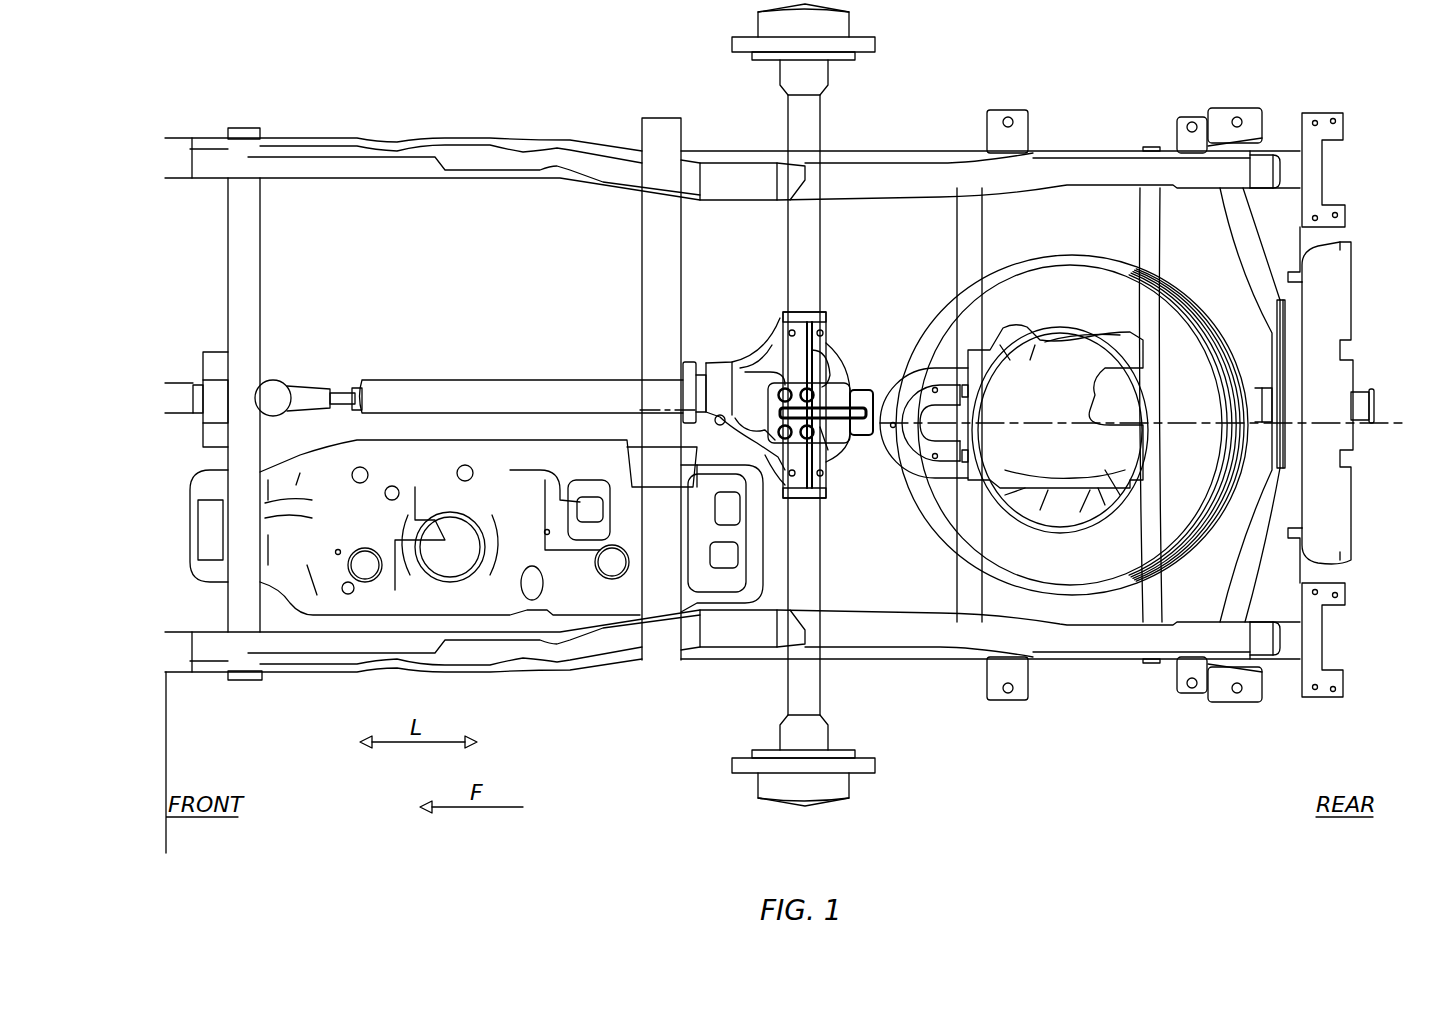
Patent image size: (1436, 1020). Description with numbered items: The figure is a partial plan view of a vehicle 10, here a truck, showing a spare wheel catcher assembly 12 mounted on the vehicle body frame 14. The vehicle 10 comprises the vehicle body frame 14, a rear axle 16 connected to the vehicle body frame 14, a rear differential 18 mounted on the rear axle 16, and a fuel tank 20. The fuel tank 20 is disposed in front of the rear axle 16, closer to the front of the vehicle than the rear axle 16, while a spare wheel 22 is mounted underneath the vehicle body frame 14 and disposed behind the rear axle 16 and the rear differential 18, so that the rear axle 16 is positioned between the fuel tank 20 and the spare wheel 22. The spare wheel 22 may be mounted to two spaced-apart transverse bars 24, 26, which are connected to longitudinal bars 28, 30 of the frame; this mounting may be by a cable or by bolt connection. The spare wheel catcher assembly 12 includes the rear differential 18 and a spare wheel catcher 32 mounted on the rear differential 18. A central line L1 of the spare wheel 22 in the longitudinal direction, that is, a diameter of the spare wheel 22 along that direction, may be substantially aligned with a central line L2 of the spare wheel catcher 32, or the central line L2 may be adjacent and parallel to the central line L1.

The vehicle 10 is at (942, 53).
The spare wheel catcher assembly 12 is at (746, 345).
The vehicle body frame 14 is at (503, 137).
The rear axle 16 is at (808, 238).
The rear differential 18 is at (817, 363).
The fuel tank 20 is at (475, 579).
The spare wheel 22 is at (1088, 288).
The transverse bar 24 is at (963, 586).
The transverse bar 26 is at (1143, 553).
The longitudinal bar 28 is at (1072, 175).
The longitudinal bar 30 is at (1107, 635).
The spare wheel catcher 32 is at (842, 422).
The central line of the spare wheel L1 is at (1053, 428).
The central line of the spare wheel catcher L2 is at (662, 412).